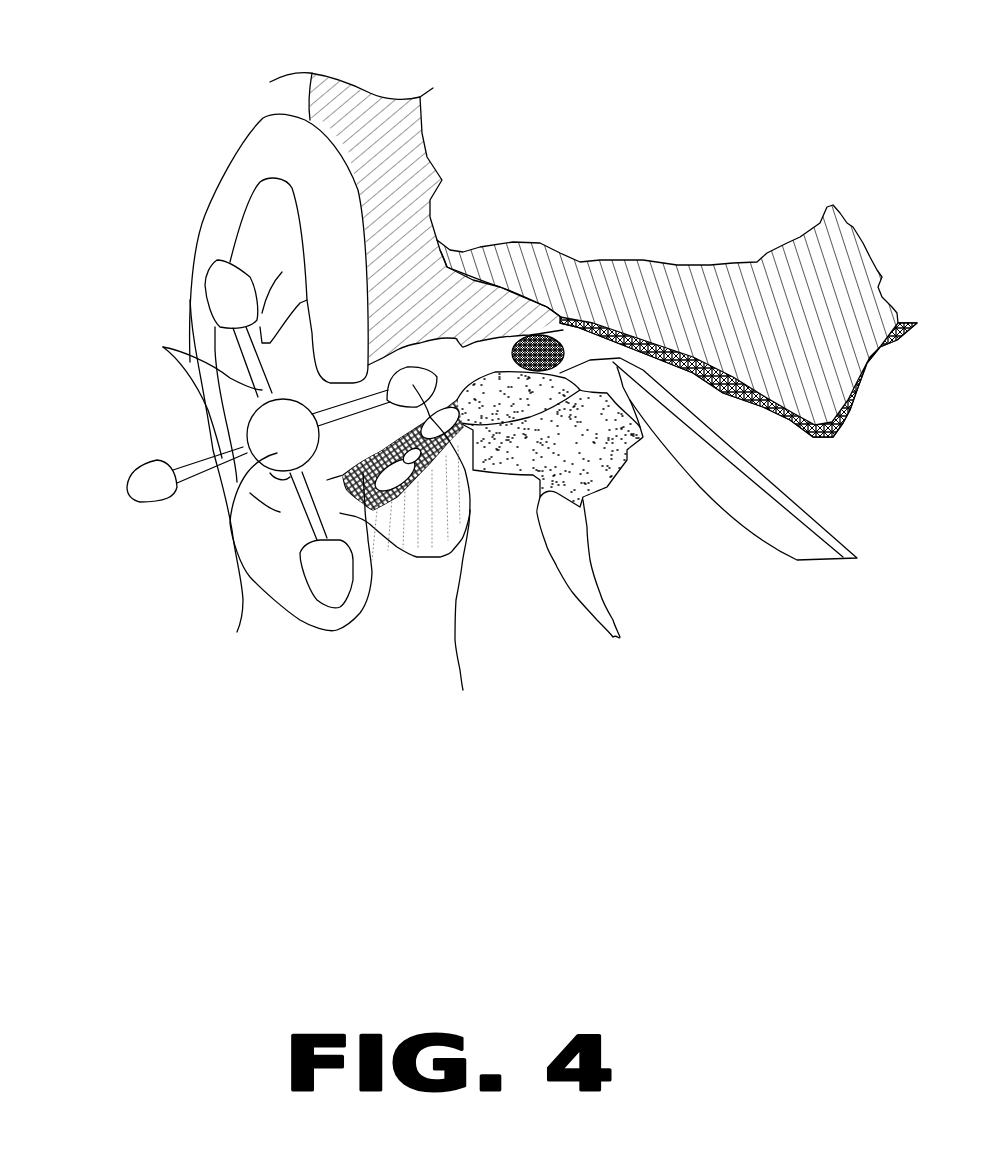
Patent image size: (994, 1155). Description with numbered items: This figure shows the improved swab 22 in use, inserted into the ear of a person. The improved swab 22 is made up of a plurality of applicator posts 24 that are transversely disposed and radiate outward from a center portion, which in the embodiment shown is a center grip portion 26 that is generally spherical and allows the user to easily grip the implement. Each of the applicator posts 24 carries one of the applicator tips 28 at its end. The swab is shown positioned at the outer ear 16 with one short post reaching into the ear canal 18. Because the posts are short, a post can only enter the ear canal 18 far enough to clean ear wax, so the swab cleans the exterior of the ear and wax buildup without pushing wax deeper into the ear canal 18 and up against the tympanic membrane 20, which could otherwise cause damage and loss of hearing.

The outer ear 16 is at (240, 170).
The ear canal 18 is at (458, 340).
The tympanic membrane 20 is at (582, 320).
The improved swab 22 is at (183, 551).
The applicator posts 24 is at (163, 347).
The center grip portion 26 is at (233, 540).
The applicator tips 28 is at (333, 588).